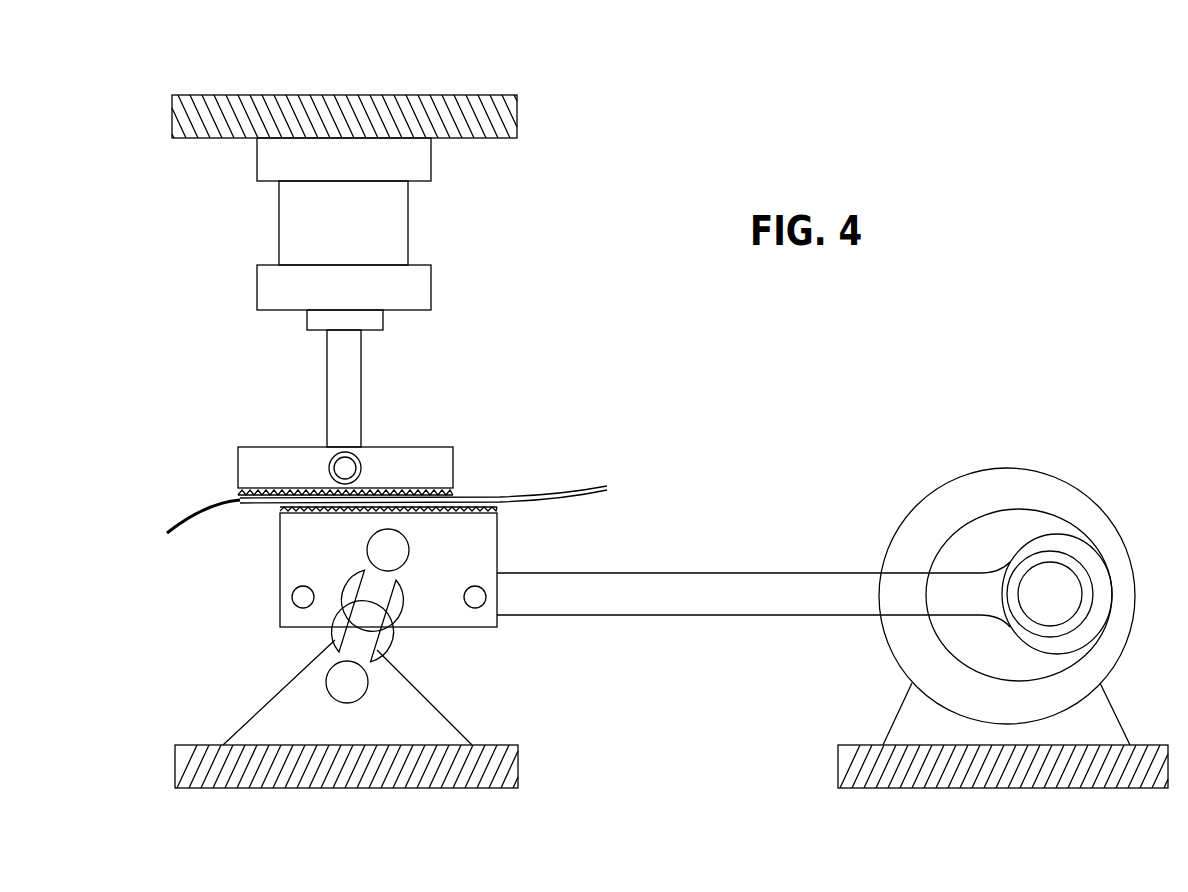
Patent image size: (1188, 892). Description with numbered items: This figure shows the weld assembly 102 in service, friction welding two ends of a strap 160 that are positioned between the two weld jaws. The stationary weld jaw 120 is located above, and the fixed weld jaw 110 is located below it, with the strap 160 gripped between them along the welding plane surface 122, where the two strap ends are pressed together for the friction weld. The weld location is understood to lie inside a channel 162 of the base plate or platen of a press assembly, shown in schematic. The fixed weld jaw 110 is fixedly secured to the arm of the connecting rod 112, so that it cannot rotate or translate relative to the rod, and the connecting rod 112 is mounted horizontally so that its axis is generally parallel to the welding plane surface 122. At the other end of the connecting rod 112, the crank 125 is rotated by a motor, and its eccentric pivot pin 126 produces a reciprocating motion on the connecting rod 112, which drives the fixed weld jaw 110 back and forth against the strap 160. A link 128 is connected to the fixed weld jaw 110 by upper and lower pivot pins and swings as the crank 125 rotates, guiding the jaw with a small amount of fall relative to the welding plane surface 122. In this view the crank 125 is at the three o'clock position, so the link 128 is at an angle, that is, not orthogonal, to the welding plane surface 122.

The weld assembly 102 is at (686, 434).
The fixed weld jaw 110 is at (270, 554).
The connecting rod 112 is at (705, 573).
The stationary weld jaw 120 is at (252, 440).
The welding plane surface 122 is at (240, 501).
The crank 125 is at (982, 560).
The eccentric pivot pin 126 is at (1043, 588).
The link 128 is at (368, 620).
The strap 160 is at (573, 487).
The channel 162 is at (530, 124).